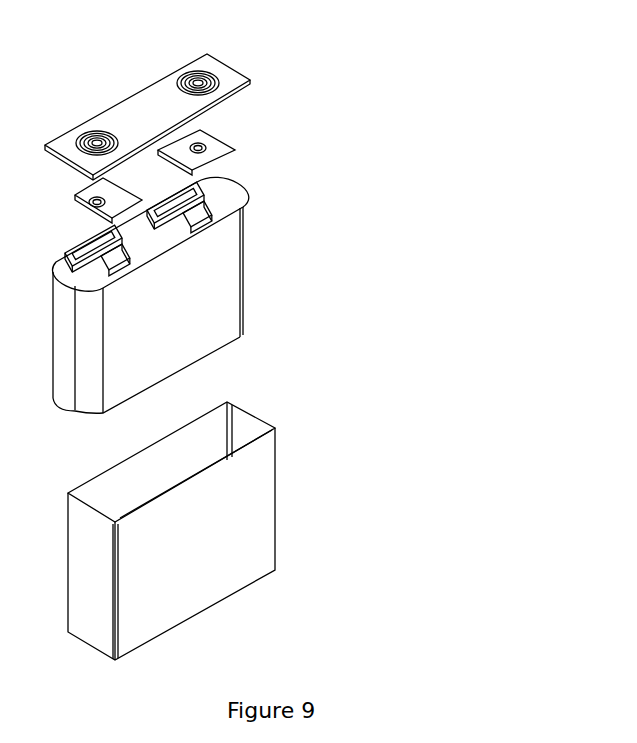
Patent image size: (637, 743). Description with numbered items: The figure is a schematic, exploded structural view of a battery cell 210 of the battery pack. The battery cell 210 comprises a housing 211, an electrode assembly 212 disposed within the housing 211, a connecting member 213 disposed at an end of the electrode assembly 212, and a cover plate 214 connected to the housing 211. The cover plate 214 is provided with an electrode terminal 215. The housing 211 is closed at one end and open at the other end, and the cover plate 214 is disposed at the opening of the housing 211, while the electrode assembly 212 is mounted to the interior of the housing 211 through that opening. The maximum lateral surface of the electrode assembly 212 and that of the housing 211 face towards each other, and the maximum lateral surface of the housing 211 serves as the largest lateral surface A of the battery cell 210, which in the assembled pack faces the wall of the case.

The battery cell 210 is at (414, 177).
The housing 211 is at (260, 435).
The electrode assembly 212 is at (227, 303).
The connecting member 213 is at (220, 149).
The cover plate 214 is at (110, 118).
The electrode terminal 215 is at (220, 80).
The largest lateral surface A is at (260, 537).